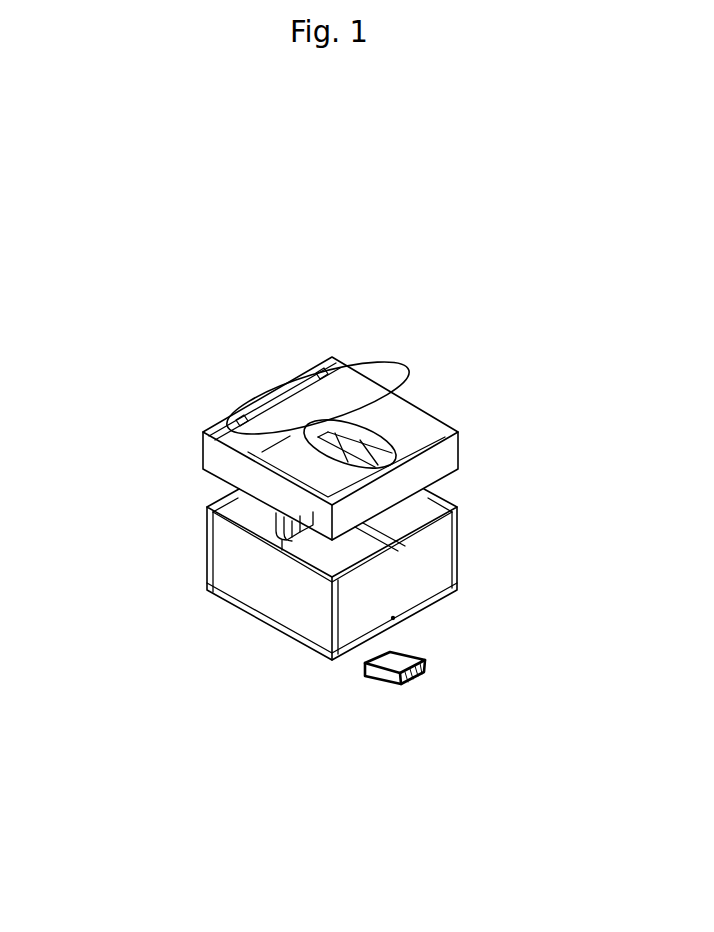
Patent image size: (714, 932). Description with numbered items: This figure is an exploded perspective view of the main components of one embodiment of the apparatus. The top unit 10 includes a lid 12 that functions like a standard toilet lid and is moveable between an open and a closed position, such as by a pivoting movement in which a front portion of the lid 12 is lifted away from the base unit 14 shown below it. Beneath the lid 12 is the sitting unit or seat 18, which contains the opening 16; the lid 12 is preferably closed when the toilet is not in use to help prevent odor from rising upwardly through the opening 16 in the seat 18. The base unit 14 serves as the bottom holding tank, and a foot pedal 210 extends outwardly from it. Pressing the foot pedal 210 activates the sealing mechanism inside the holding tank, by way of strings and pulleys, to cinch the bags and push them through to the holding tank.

The top unit 10 is at (164, 398).
The lid 12 is at (380, 385).
The base unit 14 is at (428, 552).
The opening 16 is at (368, 444).
The sitting unit or seat 18 is at (447, 457).
The foot pedal 210 is at (426, 671).